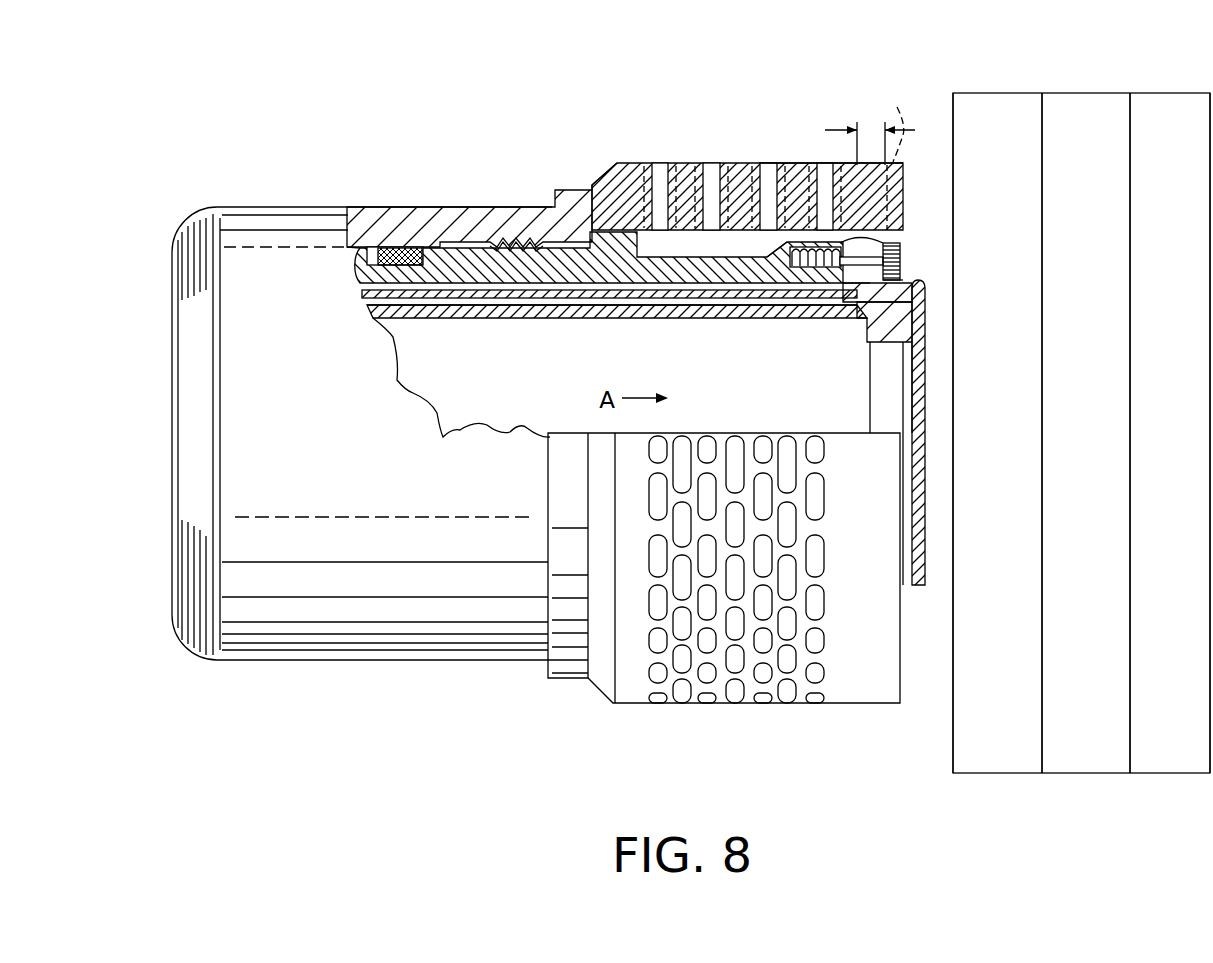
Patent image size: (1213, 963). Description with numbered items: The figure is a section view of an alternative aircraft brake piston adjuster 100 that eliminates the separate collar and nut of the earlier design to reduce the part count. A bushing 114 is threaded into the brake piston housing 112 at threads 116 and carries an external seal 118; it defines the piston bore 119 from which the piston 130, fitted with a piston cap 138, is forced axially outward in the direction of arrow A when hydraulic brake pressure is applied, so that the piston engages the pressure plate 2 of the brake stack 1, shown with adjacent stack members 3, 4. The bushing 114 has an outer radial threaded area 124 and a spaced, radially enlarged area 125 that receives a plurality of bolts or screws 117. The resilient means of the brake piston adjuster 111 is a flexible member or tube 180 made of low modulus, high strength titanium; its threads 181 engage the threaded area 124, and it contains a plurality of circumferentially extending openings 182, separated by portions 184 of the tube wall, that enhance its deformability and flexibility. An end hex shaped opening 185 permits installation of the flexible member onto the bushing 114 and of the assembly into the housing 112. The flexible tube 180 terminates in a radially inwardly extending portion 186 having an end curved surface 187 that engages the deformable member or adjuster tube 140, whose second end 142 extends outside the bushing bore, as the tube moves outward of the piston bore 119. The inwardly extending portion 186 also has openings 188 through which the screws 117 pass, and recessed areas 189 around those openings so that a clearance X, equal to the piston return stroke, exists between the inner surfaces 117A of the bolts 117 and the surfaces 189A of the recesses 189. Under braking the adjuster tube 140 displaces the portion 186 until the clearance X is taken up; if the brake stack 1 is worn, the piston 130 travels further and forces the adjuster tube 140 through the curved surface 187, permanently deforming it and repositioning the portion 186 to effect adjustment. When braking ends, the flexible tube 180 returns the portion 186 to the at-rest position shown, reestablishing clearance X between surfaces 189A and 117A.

The aircraft brake piston adjuster 100 is at (397, 102).
The housing 112 is at (282, 207).
The bushing 114 is at (568, 190).
The threads 116 is at (511, 242).
The external seal 118 is at (395, 248).
The piston bore 119 is at (443, 283).
The outer radial threaded area 124 is at (606, 205).
The radially enlarged area 125 is at (762, 262).
The piston 130 is at (500, 305).
The piston cap 138 is at (871, 414).
The deformable member or adjuster tube 140 is at (563, 292).
The second end of adjuster tube 142 is at (843, 297).
The flexible member or tube 180 is at (630, 232).
The threads 181 is at (648, 205).
The circumferentially extending openings 182 is at (703, 703).
The rings 184 is at (760, 165).
The end hex shaped opening 185 is at (897, 107).
The radially inwardly extending portion 186 is at (903, 278).
The end curved surface 187 is at (850, 285).
The openings 188 is at (838, 288).
The recessed areas 189 is at (871, 282).
The recess surfaces 189A is at (875, 245).
The brake piston adjuster 111 is at (824, 106).
The bolts or screws 117 is at (903, 253).
The inner surfaces of bolts 117A is at (898, 183).
The brake stack 1 is at (1046, 800).
The pressure plate 2 is at (998, 770).
The second wall layer 3 is at (1088, 770).
The third wall layer 4 is at (1166, 770).